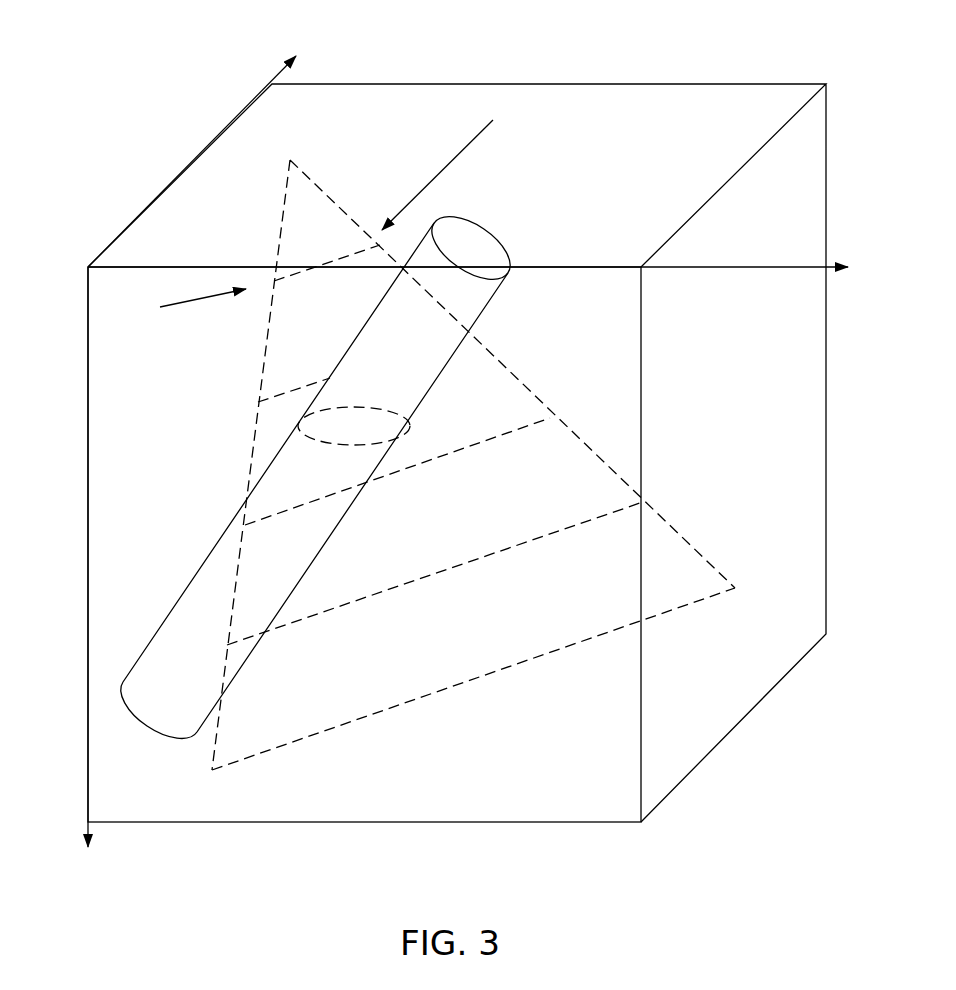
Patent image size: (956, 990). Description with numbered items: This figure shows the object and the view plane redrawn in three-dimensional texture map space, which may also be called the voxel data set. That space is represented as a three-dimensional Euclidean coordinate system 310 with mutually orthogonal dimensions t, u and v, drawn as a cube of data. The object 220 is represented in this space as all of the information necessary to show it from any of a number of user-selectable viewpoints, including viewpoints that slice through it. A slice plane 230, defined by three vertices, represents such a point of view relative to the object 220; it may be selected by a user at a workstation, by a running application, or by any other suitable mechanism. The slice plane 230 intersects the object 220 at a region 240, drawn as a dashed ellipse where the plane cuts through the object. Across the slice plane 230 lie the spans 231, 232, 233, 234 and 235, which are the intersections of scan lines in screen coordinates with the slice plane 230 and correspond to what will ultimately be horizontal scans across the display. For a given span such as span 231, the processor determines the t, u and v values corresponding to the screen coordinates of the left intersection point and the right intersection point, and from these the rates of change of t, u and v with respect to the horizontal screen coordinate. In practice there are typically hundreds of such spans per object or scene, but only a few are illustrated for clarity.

The 3D Euclidean coordinate system 310 is at (173, 146).
The slice plane 230 is at (327, 173).
The span 231 is at (303, 256).
The span 232 is at (288, 383).
The span 233 is at (457, 460).
The span 234 is at (458, 580).
The span 235 is at (458, 690).
The object 220 is at (494, 228).
The region 240 is at (351, 424).